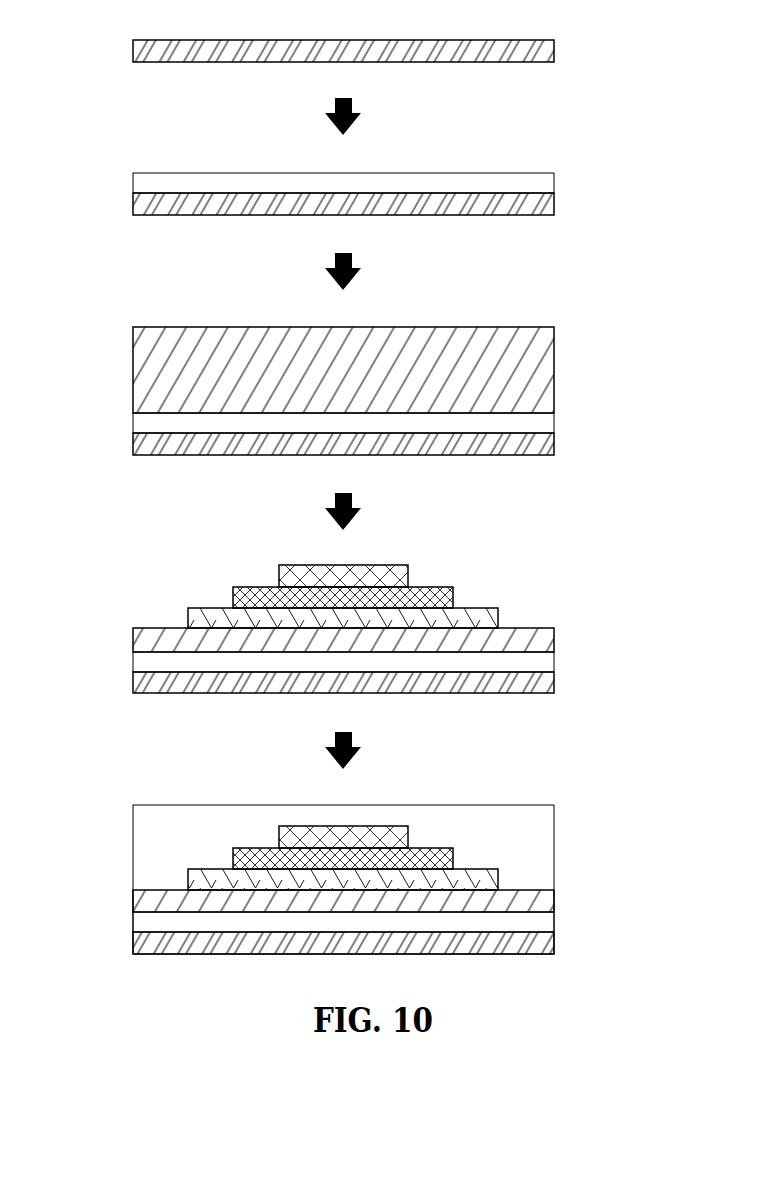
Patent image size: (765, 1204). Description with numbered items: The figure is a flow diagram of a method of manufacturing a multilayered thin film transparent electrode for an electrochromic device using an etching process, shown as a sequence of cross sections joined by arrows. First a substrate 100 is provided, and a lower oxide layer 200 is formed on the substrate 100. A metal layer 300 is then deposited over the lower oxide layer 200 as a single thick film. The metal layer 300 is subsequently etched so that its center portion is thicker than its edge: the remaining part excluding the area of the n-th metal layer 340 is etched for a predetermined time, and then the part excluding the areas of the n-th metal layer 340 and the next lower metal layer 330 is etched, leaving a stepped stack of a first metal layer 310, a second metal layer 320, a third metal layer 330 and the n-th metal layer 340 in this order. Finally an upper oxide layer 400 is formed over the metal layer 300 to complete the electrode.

The substrate 100 is at (554, 48).
The lower oxide layer 200 is at (554, 180).
The metal layer 300 is at (554, 365).
The first metal layer 310 is at (522, 640).
The n–2-th metal layer 320 is at (482, 617).
The n–1-th metal layer 330 is at (437, 596).
The n-th metal layer 340 is at (388, 577).
The upper oxide layer 400 is at (133, 845).